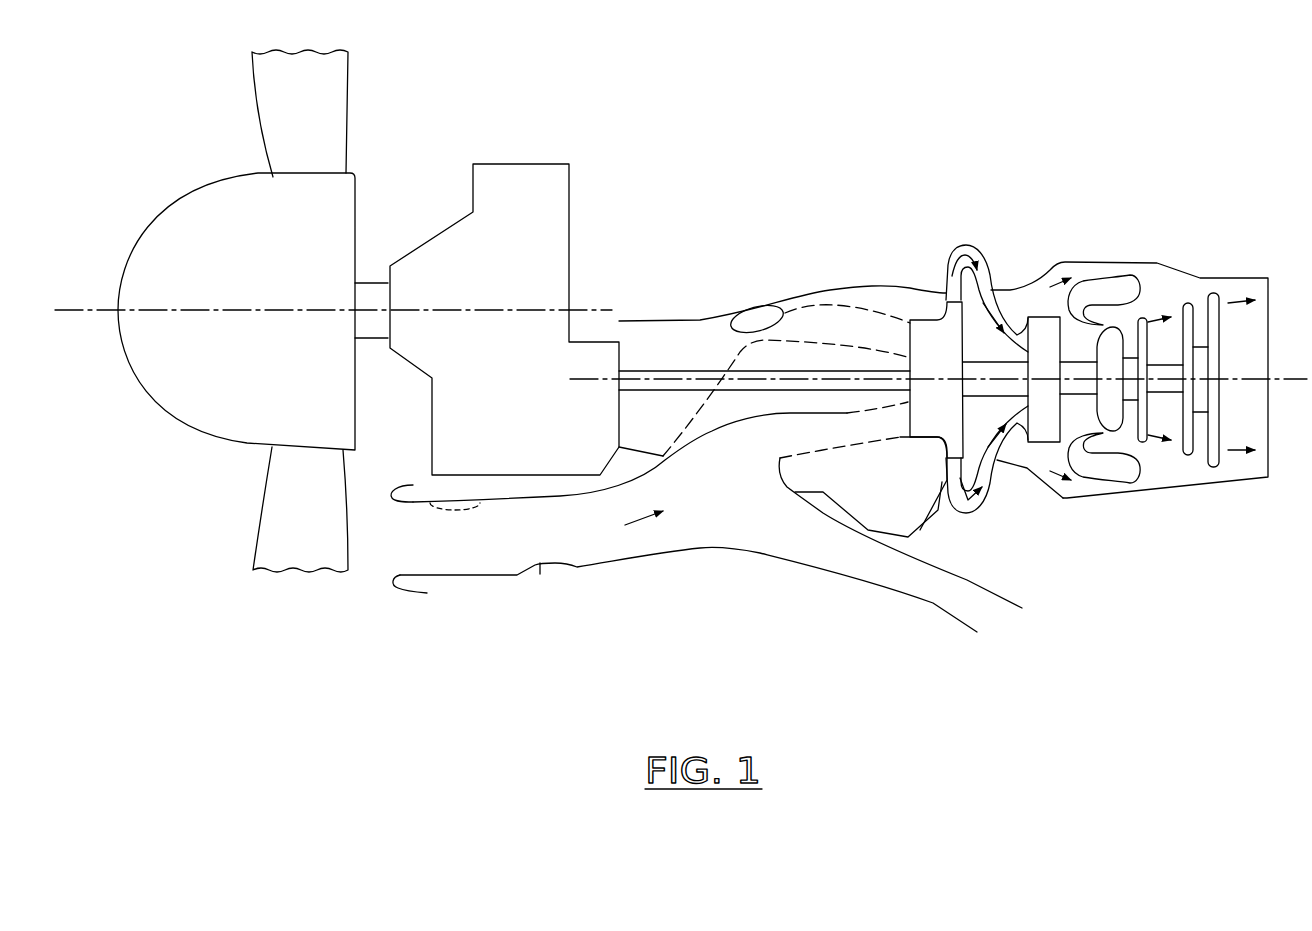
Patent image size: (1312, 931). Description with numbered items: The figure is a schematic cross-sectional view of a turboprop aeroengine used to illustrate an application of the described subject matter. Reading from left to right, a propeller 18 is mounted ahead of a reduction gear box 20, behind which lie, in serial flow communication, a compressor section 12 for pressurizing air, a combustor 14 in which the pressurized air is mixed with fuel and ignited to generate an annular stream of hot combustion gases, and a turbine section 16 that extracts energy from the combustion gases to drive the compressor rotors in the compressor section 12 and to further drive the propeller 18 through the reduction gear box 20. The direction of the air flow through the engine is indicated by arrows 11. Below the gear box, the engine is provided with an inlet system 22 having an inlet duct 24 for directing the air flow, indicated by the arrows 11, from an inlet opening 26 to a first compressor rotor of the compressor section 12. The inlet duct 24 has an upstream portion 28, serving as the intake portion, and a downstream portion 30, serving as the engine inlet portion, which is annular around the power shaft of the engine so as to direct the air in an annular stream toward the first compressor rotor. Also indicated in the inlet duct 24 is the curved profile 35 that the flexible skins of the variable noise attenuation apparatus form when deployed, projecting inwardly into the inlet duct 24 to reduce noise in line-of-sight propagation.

The arrows 11 is at (414, 537).
The compressor section 12 is at (997, 256).
The combustor 14 is at (1119, 287).
The turbine section 16 is at (1200, 243).
The propeller 18 is at (330, 153).
The reduction gear box 20 is at (527, 187).
The inlet system 22 is at (751, 600).
The inlet duct 24 is at (695, 543).
The inlet opening 26 is at (393, 563).
The upstream portion 28 is at (495, 562).
The downstream portion 30 is at (817, 317).
The curved profile 35 is at (467, 510).